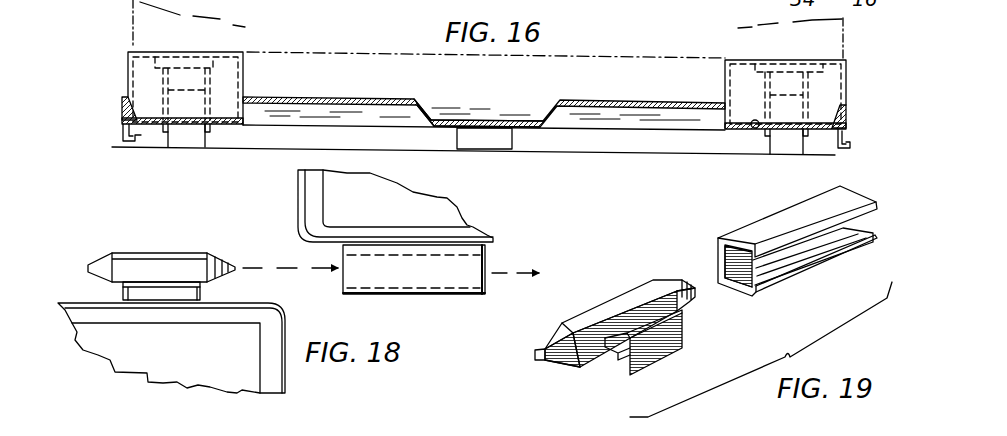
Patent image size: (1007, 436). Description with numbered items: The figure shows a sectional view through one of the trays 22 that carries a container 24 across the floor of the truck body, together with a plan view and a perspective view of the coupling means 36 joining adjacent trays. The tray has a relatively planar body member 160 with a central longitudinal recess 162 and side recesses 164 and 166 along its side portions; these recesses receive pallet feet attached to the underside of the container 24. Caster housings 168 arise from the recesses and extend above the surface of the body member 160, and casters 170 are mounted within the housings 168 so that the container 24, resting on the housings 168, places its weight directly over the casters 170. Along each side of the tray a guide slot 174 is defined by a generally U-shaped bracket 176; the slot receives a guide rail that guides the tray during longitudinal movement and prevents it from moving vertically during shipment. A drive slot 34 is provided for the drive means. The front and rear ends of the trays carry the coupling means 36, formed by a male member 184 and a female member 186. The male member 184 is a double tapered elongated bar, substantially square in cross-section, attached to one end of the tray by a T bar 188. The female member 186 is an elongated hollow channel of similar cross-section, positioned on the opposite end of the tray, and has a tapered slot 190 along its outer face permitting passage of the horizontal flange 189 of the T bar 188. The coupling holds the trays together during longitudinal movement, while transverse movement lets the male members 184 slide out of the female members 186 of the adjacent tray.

In FIG. 16, the tray 22 is at (315, 94).
In FIG. 18, the tray 22 is at (258, 345).
In FIG. 16, the container 24 is at (148, 24).
In FIG. 16, the drive slot 34 is at (491, 137).
In FIG. 19, the coupling means 36 is at (695, 268).
In FIG. 16, the body member 160 is at (425, 99).
In FIG. 16, the central longitudinal recess 162 is at (503, 114).
In FIG. 16, the side recess 164 is at (752, 129).
In FIG. 16, the side recess 166 is at (240, 108).
In FIG. 16, the caster housing 168 is at (142, 68).
In FIG. 16, the caster 170 is at (186, 133).
In FIG. 16, the guide slot 174 is at (124, 130).
In FIG. 16, the U-shaped bracket 176 is at (125, 140).
In FIG. 18, the male member 184 is at (167, 260).
In FIG. 19, the male member 184 is at (618, 305).
In FIG. 18, the female member 186 is at (420, 267).
In FIG. 19, the female member 186 is at (755, 234).
In FIG. 18, the T bar 188 is at (128, 295).
In FIG. 19, the T bar 188 is at (658, 343).
In FIG. 19, the horizontal flange 189 is at (615, 352).
In FIG. 19, the tapered slot 190 is at (823, 257).